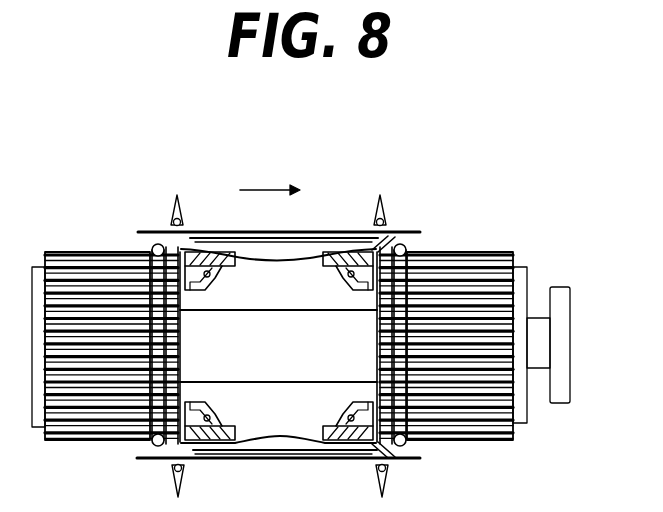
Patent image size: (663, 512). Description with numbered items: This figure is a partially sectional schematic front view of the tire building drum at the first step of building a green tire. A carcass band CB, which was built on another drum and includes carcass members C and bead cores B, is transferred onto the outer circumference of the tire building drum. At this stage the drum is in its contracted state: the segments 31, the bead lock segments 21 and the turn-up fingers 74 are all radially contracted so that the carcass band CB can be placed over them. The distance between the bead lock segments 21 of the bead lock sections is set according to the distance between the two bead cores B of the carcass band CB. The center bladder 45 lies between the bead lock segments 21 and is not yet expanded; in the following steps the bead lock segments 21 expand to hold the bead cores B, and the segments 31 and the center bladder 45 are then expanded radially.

The bead lock segment 21 is at (398, 234).
The segment 31 is at (388, 244).
The center bladder 45 is at (285, 252).
The turn-up finger 74 is at (452, 250).
The bead core B is at (176, 216).
The carcass member C is at (222, 232).
The carcass band CB is at (255, 178).